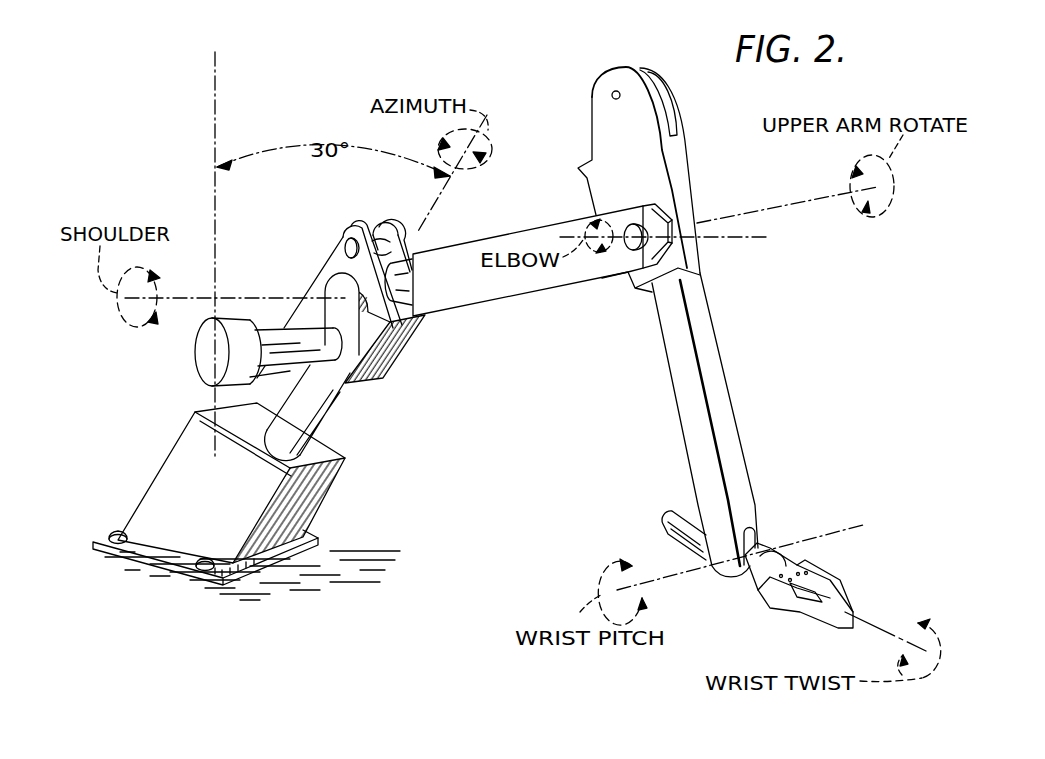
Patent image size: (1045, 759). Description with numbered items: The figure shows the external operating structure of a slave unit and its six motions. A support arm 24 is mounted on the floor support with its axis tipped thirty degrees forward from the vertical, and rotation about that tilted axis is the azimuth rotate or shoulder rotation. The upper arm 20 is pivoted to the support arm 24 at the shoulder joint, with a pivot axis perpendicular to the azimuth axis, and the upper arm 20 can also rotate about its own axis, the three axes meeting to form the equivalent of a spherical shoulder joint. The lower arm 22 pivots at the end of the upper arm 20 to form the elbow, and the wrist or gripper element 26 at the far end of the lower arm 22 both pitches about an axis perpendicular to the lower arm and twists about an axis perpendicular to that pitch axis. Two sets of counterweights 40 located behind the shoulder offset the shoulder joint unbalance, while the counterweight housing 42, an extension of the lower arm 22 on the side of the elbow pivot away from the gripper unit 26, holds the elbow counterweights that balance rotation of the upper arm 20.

The upper arm 20 is at (527, 277).
The lower arm 22 is at (718, 410).
The support arm 24 is at (333, 418).
The wrist or gripper element 26 is at (800, 569).
The counterweights 40 is at (267, 318).
The counterweight housing 42 is at (647, 175).